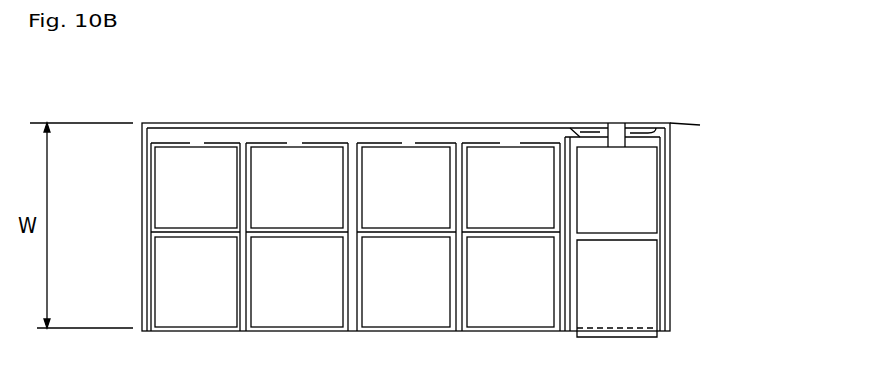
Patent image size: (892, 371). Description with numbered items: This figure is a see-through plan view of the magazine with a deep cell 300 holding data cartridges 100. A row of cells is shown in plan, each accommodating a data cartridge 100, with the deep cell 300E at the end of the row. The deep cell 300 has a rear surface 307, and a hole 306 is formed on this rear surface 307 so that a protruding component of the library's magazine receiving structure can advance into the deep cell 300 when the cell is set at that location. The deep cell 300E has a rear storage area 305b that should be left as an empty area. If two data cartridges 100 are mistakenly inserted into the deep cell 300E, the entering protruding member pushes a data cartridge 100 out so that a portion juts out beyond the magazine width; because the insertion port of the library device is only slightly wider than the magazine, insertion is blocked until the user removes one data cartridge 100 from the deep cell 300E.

The data cartridge 100 is at (173, 270).
The deep cell 300 is at (221, 143).
The deep cell 300E is at (672, 124).
The rear storage area 305b is at (570, 127).
The hole 306 is at (628, 126).
The rear surface 307 is at (597, 130).